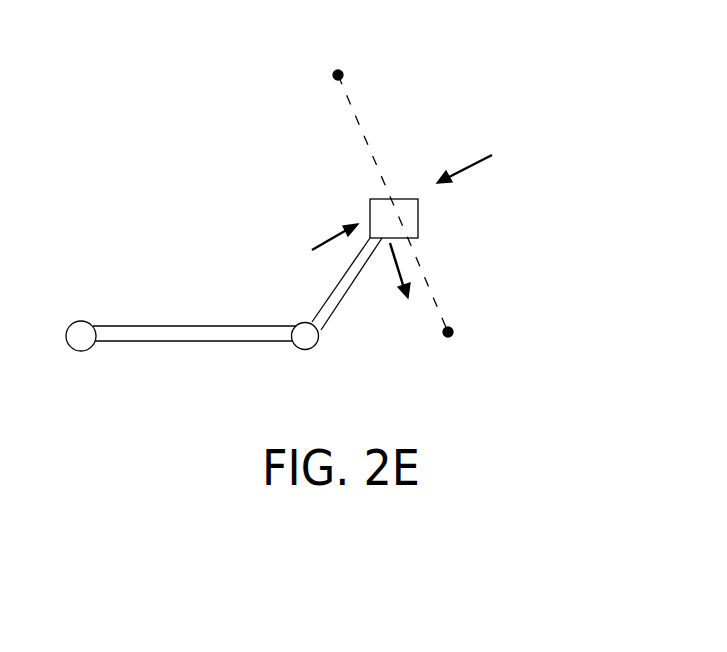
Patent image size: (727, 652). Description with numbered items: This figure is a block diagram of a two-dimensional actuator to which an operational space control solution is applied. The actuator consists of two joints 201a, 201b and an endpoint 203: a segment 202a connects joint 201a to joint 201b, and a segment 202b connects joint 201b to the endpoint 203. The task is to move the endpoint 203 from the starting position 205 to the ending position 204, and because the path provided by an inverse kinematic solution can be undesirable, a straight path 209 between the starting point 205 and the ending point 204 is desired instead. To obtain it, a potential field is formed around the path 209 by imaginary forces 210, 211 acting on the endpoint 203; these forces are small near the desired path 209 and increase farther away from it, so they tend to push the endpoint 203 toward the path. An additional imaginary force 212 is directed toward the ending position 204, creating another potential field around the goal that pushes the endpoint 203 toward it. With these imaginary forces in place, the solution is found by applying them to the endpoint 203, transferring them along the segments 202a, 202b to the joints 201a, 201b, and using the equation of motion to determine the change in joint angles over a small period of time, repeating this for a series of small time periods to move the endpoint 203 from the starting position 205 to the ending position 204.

The joint 201a is at (86, 320).
The joint 201b is at (318, 348).
The segment 202a is at (140, 341).
The segment 202b is at (345, 301).
The endpoint 203 is at (369, 202).
The ending position 204 is at (452, 327).
The starting position 205 is at (343, 68).
The straight path 209 is at (368, 140).
The imaginary force 210 is at (328, 236).
The imaginary force 211 is at (470, 163).
The additional imaginary force 212 is at (403, 267).